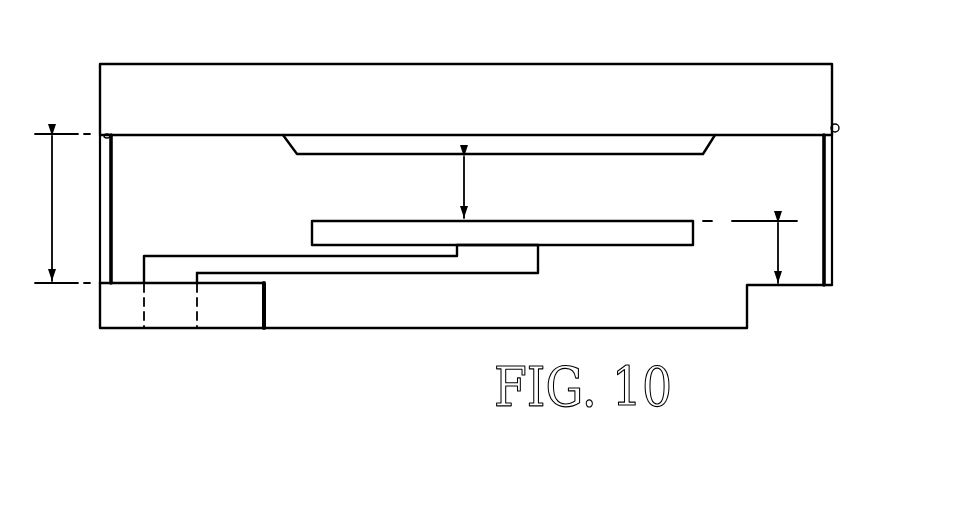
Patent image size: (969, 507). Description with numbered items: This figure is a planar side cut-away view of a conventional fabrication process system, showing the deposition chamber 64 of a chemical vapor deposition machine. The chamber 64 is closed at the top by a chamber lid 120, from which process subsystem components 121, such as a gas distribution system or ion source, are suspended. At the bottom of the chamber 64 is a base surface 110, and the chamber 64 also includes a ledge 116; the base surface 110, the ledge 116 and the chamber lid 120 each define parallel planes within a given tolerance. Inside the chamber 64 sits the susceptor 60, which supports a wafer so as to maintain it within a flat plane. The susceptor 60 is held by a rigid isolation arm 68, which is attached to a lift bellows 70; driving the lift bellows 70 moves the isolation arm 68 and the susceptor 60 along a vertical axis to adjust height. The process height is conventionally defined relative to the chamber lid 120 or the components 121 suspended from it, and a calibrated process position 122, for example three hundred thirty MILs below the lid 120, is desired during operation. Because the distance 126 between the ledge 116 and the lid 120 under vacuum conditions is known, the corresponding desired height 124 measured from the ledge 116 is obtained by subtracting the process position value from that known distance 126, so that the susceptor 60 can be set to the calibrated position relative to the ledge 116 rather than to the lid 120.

The chamber lid 120 is at (507, 63).
The ledge 116 is at (125, 283).
The process subsystem components 121 is at (703, 155).
The calibrated process position 122 is at (467, 196).
The susceptor 60 is at (639, 220).
The rigid isolation arm 68 is at (343, 273).
The lift bellows 70 is at (197, 300).
The base surface 110 is at (530, 328).
The known distance 126 is at (52, 252).
The desired height 124 is at (778, 250).
The deposition chamber 64 is at (232, 209).